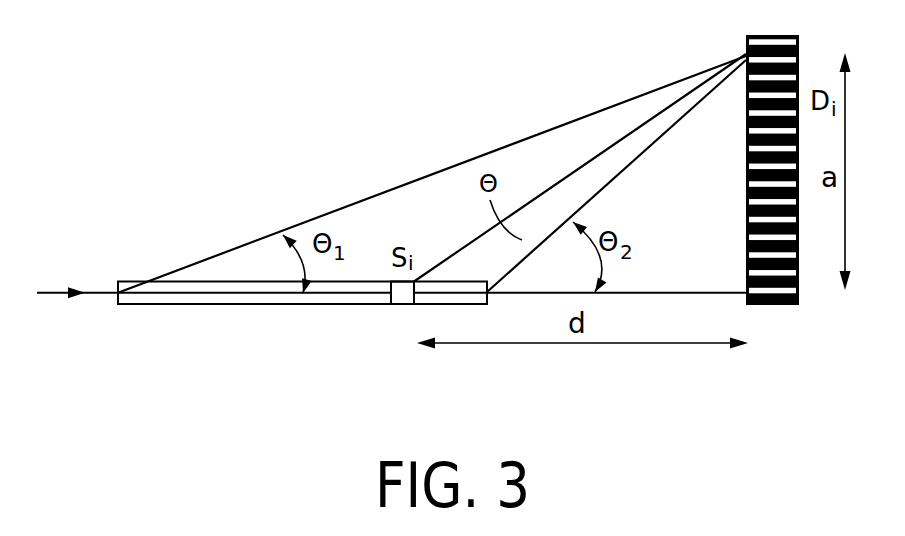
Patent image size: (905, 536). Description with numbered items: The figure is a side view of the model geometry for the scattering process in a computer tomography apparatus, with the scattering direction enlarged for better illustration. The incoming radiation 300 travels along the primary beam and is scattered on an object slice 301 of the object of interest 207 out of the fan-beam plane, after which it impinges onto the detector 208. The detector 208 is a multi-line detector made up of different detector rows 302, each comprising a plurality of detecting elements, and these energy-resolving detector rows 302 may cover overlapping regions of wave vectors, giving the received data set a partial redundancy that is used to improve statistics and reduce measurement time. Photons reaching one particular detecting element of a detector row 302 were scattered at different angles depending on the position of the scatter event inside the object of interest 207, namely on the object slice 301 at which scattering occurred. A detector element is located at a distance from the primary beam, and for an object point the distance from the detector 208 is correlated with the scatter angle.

The incoming radiation 300 is at (102, 290).
The object of interest 207 is at (208, 305).
The object slice 301 is at (398, 305).
The detector 208 is at (712, 156).
The detector rows 302 is at (759, 148).